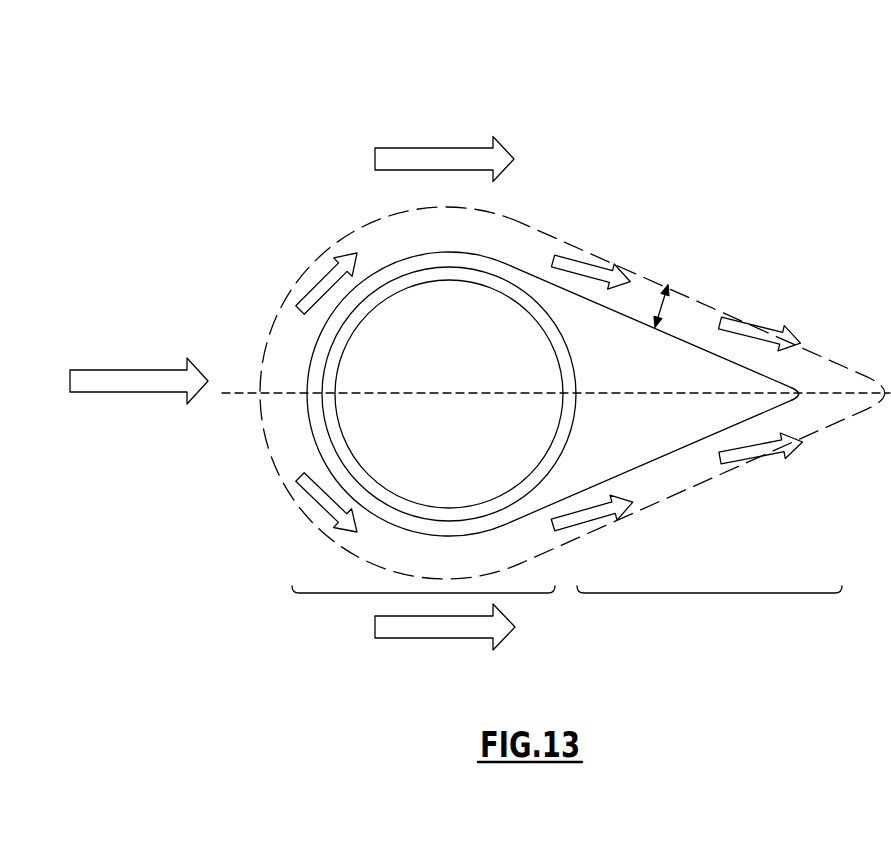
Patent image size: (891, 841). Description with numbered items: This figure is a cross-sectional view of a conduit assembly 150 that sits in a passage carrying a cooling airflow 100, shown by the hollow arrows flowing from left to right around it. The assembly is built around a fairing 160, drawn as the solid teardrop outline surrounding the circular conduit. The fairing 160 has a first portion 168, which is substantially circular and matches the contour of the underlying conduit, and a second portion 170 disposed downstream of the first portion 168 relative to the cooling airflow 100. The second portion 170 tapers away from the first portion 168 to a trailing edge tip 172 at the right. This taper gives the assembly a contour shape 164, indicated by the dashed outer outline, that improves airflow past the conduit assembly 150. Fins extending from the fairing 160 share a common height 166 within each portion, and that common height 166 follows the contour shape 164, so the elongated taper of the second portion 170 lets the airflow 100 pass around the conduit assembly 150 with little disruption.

The cooling airflow 100 is at (436, 157).
The conduit assembly 150 is at (553, 430).
The fairing 160 is at (513, 267).
The contour shape 164 is at (575, 237).
The common height 166 is at (663, 307).
The first portion 168 is at (365, 593).
The second portion 170 is at (712, 593).
The trailing edge tip 172 is at (800, 391).